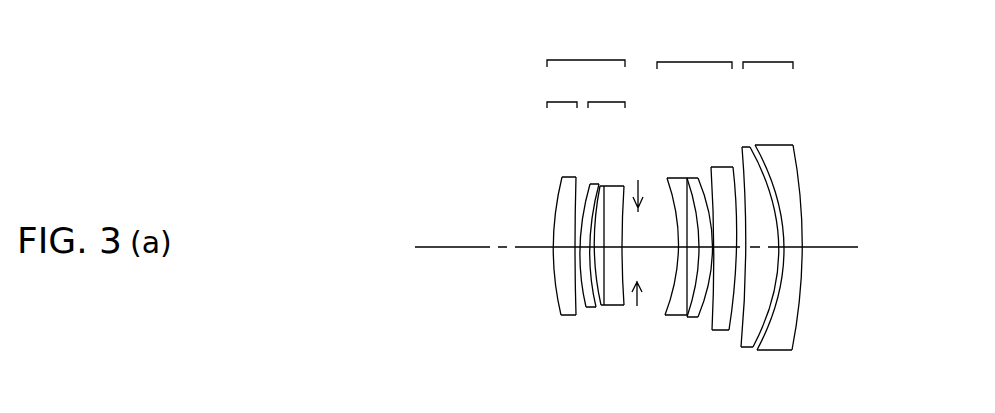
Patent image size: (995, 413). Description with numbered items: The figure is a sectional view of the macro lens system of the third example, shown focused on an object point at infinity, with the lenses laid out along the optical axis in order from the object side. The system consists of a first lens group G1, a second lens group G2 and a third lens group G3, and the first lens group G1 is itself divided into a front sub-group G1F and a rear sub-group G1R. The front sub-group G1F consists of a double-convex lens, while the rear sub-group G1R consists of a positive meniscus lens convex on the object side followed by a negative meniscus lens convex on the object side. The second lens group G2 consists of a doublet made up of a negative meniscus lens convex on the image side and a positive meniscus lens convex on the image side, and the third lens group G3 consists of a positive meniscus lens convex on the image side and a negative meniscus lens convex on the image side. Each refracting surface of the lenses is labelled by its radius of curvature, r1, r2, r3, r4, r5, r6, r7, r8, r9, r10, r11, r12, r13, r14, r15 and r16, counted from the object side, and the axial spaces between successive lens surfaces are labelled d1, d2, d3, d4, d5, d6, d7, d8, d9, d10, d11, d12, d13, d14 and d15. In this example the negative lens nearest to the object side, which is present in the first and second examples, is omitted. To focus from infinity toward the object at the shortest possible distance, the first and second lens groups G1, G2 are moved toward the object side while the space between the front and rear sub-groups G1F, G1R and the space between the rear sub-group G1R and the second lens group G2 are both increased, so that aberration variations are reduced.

The first lens group G1 is at (586, 48).
The front sub-group G1F is at (561, 92).
The rear sub-group G1R is at (612, 92).
The second lens group G2 is at (694, 49).
The third lens group G3 is at (768, 49).
The radius of curvature r1 is at (558, 190).
The radius of curvature r2 is at (576, 178).
The radius of curvature r3 is at (590, 184).
The radius of curvature r4 is at (600, 184).
The radius of curvature r5 is at (619, 186).
The radius of curvature r6 is at (625, 186).
The radius of curvature r7 is at (669, 204).
The radius of curvature r8 is at (680, 188).
The radius of curvature r9 is at (690, 178).
The radius of curvature r10 is at (699, 178).
The radius of curvature r11 is at (713, 167).
The radius of curvature r12 is at (733, 166).
The radius of curvature r13 is at (742, 147).
The radius of curvature r14 is at (756, 150).
The radius of curvature r15 is at (765, 167).
The radius of curvature r16 is at (797, 165).
The lens surface space d1 is at (563, 262).
The lens surface space d2 is at (578, 300).
The lens surface space d3 is at (587, 308).
The lens surface space d4 is at (610, 296).
The lens surface space d5 is at (618, 308).
The lens surface space d6 is at (630, 261).
The lens surface space d7 is at (658, 261).
The lens surface space d8 is at (684, 300).
The lens surface space d9 is at (693, 302).
The lens surface space d10 is at (702, 300).
The lens surface space d11 is at (721, 333).
The lens surface space d12 is at (735, 300).
The lens surface space d13 is at (761, 263).
The lens surface space d14 is at (784, 268).
The lens surface space d15 is at (794, 256).